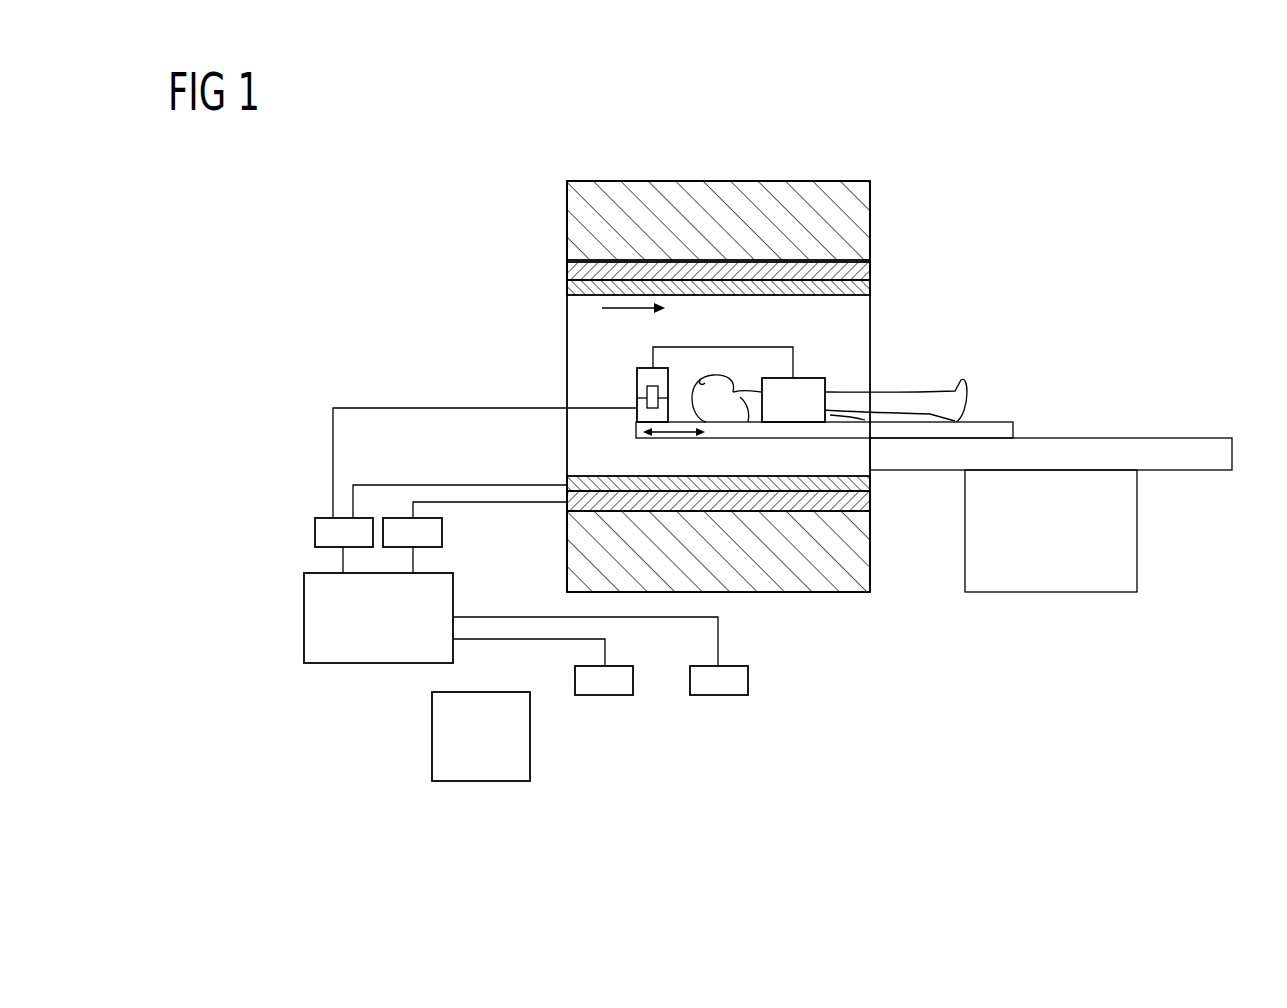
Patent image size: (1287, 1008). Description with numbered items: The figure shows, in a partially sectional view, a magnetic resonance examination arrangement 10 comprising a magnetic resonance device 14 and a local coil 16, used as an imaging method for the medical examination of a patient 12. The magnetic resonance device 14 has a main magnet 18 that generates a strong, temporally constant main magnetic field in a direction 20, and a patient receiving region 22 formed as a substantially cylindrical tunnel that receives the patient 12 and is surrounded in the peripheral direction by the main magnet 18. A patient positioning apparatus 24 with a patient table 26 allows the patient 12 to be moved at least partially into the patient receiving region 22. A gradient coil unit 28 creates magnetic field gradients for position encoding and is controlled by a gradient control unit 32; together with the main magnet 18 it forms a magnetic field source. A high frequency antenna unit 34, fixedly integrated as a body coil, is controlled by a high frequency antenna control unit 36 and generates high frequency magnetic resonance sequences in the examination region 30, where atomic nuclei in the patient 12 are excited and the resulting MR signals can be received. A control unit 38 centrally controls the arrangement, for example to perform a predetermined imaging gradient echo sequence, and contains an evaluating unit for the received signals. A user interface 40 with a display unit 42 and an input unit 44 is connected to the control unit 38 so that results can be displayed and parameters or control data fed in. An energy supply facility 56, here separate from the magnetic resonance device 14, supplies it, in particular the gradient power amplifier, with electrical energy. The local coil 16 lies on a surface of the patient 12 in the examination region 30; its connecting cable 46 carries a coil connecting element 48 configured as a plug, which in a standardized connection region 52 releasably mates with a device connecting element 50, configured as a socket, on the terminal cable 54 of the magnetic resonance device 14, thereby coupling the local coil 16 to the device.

The magnetic resonance examination arrangement 10 is at (1080, 195).
The patient 12 is at (890, 408).
The magnetic resonance device 14 is at (885, 223).
The local coil 16 is at (807, 378).
The main magnet 18 is at (578, 225).
The direction 20 is at (624, 308).
The patient receiving region 22 is at (870, 331).
The patient positioning apparatus 24 is at (1160, 497).
The patient table 26 is at (993, 428).
The gradient coil unit 28 is at (870, 268).
The examination region 30 is at (810, 452).
The gradient control unit 32 is at (442, 535).
The high frequency antenna unit 34 is at (575, 292).
The high frequency antenna control unit 36 is at (315, 535).
The control unit 38 is at (380, 665).
The user interface 40 is at (652, 743).
The display unit 42 is at (605, 697).
The input unit 44 is at (720, 697).
The connecting cable 46 is at (730, 345).
The coil connecting element 48 is at (637, 378).
The device connecting element 50 is at (637, 413).
The connection region 52 is at (683, 375).
The terminal cable 54 is at (383, 407).
The energy supply facility 56 is at (482, 783).